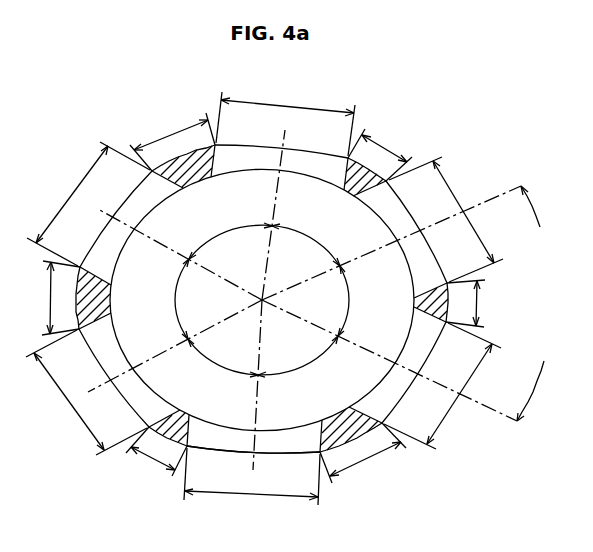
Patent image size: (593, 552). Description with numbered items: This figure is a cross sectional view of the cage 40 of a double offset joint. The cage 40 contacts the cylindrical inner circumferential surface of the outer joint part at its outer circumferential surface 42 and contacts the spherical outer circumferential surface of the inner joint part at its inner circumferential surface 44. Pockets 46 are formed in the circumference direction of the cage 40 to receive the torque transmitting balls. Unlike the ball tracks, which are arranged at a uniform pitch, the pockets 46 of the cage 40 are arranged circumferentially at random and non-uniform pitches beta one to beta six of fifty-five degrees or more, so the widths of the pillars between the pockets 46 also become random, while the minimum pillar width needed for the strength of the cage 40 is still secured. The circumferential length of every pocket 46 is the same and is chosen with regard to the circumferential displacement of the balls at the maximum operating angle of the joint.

The cage 40 is at (430, 143).
The outer circumferential surface 42 is at (335, 468).
The inner circumferential surface 44 is at (333, 414).
The pocket 46 is at (304, 172).